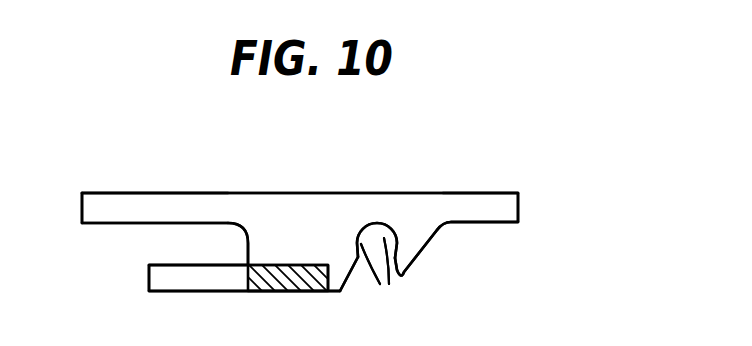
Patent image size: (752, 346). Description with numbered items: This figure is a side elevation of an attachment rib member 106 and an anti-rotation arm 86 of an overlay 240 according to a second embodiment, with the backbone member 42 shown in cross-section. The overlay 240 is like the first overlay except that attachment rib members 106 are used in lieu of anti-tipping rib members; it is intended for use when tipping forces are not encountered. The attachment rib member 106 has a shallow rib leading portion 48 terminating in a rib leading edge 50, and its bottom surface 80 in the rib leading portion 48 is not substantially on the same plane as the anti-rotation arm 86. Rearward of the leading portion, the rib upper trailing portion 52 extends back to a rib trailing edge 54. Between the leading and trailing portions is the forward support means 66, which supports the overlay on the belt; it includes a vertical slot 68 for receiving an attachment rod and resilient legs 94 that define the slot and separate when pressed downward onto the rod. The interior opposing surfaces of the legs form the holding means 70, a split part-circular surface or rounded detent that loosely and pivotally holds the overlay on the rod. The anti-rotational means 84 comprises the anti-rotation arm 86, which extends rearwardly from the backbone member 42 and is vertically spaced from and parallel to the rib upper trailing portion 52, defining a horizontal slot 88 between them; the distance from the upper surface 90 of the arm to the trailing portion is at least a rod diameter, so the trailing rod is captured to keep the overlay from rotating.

The overlay 240 is at (565, 147).
The rib leading edge 50 is at (520, 207).
The rib leading portion 48 is at (472, 205).
The rib upper trailing portion 52 is at (150, 203).
The rib trailing edge 54 is at (82, 198).
The horizontal slot 88 is at (208, 238).
The attachment rib member 106 is at (291, 186).
The rib leading bottom surface 80 is at (472, 223).
The forward support means 66 is at (373, 218).
The resilient legs 94 is at (355, 243).
The holding means 70 is at (384, 275).
The vertical slot 68 is at (371, 292).
The anti-rotational means 84 is at (143, 281).
The backbone member 42 is at (297, 293).
The anti-rotation arm 86 is at (202, 285).
The upper surface of anti-rotation arm 90 is at (168, 265).